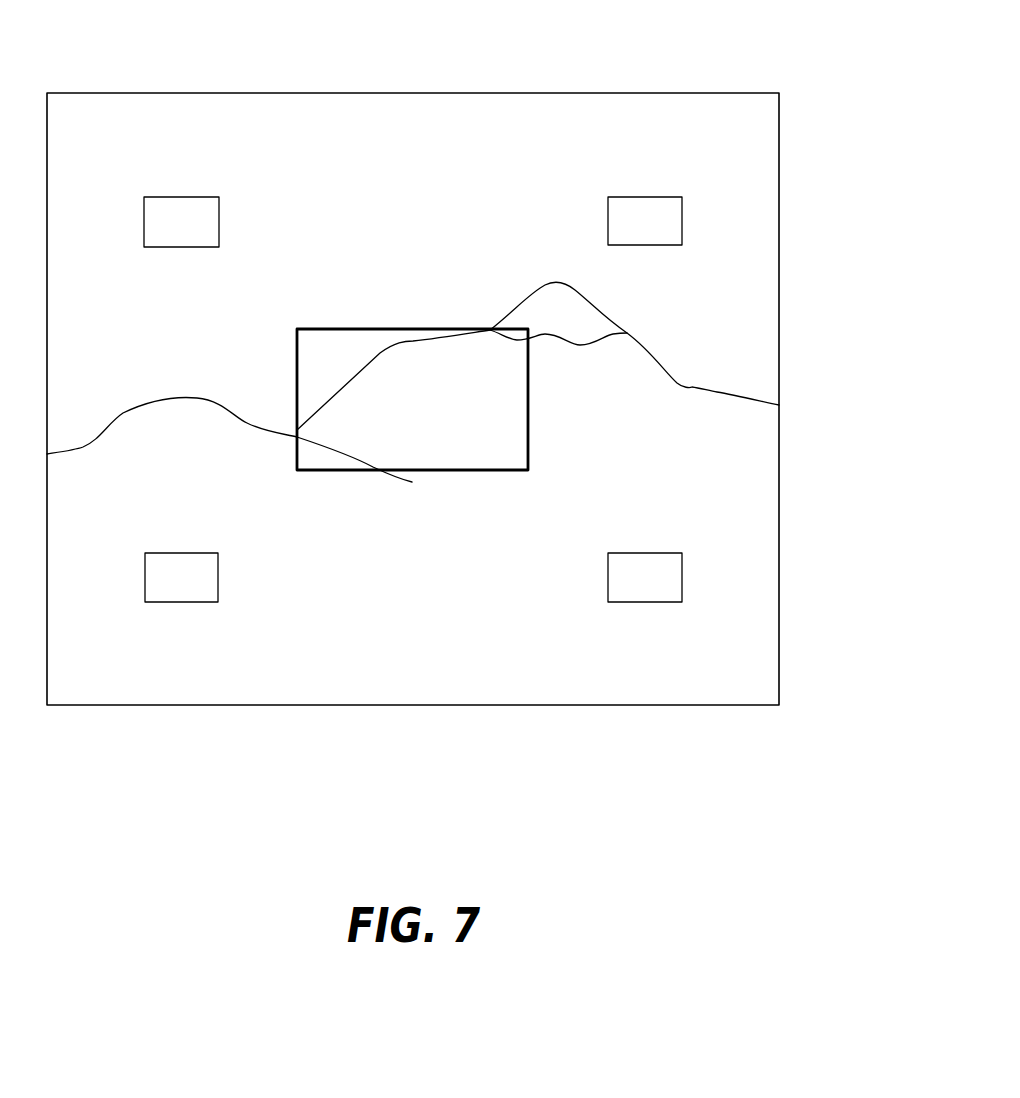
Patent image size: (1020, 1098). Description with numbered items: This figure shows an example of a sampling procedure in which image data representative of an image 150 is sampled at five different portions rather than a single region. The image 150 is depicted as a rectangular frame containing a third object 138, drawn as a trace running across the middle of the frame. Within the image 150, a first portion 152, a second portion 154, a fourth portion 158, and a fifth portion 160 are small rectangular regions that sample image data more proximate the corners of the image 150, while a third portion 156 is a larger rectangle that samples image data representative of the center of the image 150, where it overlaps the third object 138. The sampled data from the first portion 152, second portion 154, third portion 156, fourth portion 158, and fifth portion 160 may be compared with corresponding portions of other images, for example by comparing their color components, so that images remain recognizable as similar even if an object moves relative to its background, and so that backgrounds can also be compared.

The third object 138 is at (692, 387).
The image 150 is at (560, 92).
The first portion 152 is at (182, 196).
The second portion 154 is at (643, 196).
The third portion 156 is at (297, 363).
The fourth portion 158 is at (182, 552).
The fifth portion 160 is at (645, 552).